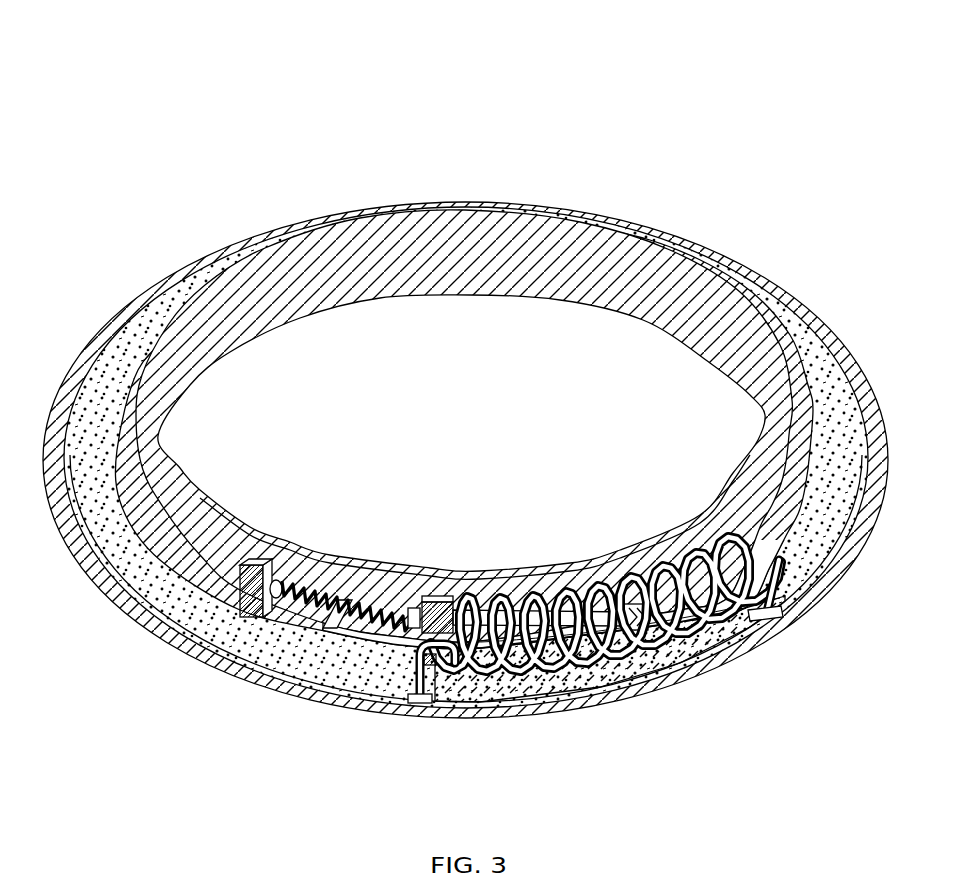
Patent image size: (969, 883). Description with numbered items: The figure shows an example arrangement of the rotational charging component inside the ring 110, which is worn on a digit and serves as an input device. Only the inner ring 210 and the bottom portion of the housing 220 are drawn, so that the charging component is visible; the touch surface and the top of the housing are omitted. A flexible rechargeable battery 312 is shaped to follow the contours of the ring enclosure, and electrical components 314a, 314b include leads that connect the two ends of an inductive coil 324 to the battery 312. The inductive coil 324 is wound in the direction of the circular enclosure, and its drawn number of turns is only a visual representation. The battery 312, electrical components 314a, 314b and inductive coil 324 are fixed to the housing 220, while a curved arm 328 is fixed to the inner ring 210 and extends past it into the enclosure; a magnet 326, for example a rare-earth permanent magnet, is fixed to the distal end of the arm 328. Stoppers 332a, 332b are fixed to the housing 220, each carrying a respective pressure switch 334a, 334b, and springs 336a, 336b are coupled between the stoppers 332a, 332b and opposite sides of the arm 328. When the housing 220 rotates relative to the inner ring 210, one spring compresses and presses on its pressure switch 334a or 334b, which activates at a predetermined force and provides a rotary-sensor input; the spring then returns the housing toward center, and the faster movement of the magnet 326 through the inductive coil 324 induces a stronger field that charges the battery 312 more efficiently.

The ring 110 is at (676, 134).
The inner ring 210 is at (423, 228).
The housing 220 is at (497, 695).
The rechargeable battery 312 is at (812, 383).
The electrical component 314a is at (415, 703).
The electrical component 314b is at (767, 621).
The inductive coil 324 is at (707, 618).
The magnet 326 is at (642, 631).
The arm 328 is at (330, 630).
The stopper 332a is at (252, 565).
The stopper 332b is at (438, 596).
The pressure switch 334a is at (273, 582).
The pressure switch 334b is at (413, 608).
The spring 336a is at (310, 593).
The spring 336b is at (380, 612).